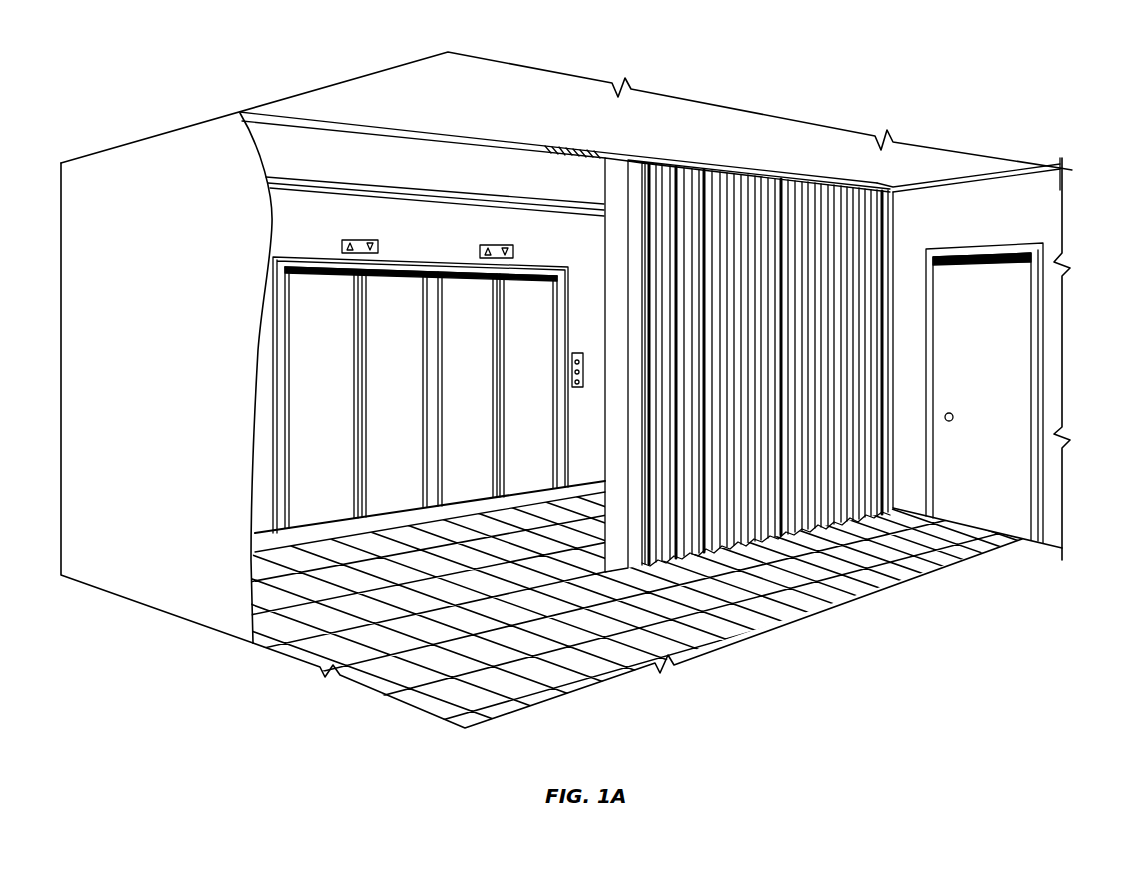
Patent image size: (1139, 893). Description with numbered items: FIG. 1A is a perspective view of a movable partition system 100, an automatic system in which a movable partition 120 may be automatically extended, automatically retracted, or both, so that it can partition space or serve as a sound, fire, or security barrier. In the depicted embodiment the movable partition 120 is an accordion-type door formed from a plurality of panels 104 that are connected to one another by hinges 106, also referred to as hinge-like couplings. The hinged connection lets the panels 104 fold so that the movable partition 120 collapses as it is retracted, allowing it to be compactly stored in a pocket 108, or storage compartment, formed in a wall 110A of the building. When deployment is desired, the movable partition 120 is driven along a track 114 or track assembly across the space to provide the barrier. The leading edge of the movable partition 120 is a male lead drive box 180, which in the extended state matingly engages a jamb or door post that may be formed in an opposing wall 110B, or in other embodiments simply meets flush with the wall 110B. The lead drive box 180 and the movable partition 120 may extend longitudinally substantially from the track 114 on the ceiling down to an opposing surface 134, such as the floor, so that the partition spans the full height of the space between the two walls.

The movable partition system 100 is at (1032, 130).
The panels 104 is at (800, 533).
The hinges 106 is at (720, 557).
The pocket 108 is at (905, 367).
The wall 110A is at (1025, 225).
The wall 110B is at (178, 358).
The track 114 is at (577, 147).
The movable partition 120 is at (785, 429).
The opposing surface 134 is at (842, 550).
The lead drive box 180 is at (603, 237).